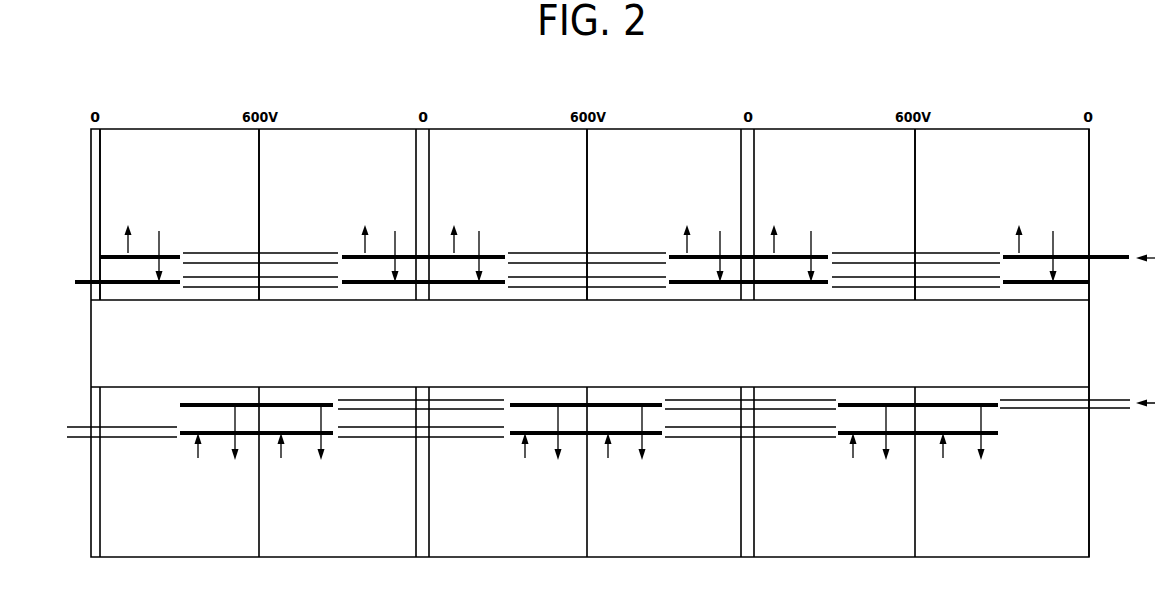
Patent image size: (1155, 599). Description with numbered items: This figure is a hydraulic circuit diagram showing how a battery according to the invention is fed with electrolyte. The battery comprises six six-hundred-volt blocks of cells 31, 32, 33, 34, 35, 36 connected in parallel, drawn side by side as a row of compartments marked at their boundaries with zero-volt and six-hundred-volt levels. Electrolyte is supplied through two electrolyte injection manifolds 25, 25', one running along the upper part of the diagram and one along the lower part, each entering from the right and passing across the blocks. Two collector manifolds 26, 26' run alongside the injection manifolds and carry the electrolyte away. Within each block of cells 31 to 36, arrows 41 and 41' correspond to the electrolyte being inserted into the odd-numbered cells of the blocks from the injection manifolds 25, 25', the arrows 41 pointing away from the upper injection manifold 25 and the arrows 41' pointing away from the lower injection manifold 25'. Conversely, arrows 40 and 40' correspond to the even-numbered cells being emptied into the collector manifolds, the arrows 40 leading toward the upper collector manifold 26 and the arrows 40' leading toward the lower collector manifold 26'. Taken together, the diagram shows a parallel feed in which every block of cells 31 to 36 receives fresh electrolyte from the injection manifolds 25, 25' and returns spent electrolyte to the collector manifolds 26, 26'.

The block of cells 36 is at (157, 165).
The block of cells 35 is at (313, 158).
The block of cells 34 is at (483, 155).
The block of cells 33 is at (652, 158).
The block of cells 32 is at (810, 155).
The block of cells 31 is at (952, 148).
The collector manifold 26 is at (591, 295).
The electrolyte injection manifold 25 is at (1079, 222).
The arrow 41 is at (566, 218).
The arrow 40 is at (616, 232).
The collector manifold 26' is at (451, 453).
The electrolyte injection manifold 25' is at (1077, 435).
The arrow 40' is at (556, 468).
The arrow 41' is at (639, 453).